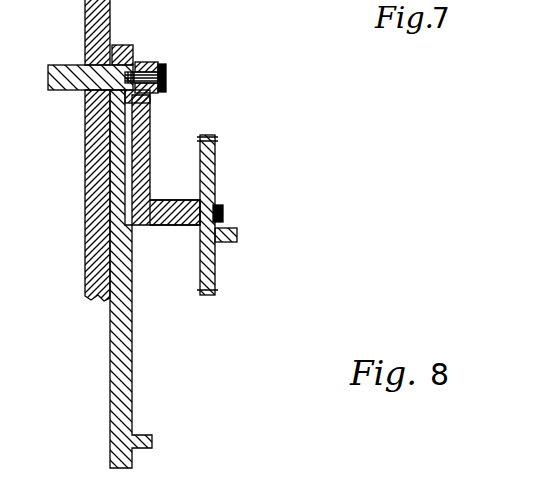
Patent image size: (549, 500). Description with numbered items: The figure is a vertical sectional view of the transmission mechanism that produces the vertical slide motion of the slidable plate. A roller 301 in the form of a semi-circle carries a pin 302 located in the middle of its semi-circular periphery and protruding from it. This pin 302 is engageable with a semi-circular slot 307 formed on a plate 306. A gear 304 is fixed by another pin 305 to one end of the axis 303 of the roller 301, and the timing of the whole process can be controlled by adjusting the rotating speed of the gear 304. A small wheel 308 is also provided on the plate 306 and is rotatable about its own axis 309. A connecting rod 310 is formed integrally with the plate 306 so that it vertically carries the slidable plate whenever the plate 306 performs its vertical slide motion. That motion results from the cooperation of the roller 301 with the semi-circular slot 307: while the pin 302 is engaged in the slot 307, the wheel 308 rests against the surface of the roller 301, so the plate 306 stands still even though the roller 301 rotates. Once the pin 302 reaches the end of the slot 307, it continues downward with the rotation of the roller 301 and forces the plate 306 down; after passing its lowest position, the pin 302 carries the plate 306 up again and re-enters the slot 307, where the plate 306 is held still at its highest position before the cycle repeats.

The roller 301 is at (150, 158).
The pin 302 is at (160, 100).
The axis 303 is at (167, 226).
The gear 304 is at (215, 158).
The pin 305 is at (222, 205).
The plate 306 is at (117, 343).
The semi-circular slot 307 is at (110, 130).
The small wheel 308 is at (140, 62).
The axis 309 is at (167, 75).
The connecting rod 310 is at (55, 65).